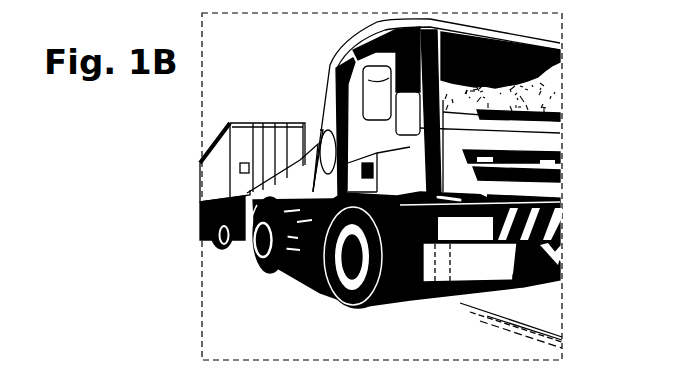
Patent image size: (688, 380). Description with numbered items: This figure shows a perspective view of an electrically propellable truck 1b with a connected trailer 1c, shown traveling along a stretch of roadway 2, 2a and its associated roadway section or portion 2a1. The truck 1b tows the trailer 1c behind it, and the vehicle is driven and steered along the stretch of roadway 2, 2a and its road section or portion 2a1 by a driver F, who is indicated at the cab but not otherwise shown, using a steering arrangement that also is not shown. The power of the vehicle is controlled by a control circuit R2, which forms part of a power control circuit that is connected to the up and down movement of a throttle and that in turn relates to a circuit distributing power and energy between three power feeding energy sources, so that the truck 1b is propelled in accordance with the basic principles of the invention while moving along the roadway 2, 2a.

The electrically propellable truck 1b is at (360, 45).
The trailer 1c is at (263, 118).
The driver F is at (535, 100).
The stretch of roadway 2 is at (272, 308).
The control circuit R2 is at (323, 293).
The stretch of roadway 2a is at (557, 305).
The roadway section or portion 2a1 is at (510, 320).